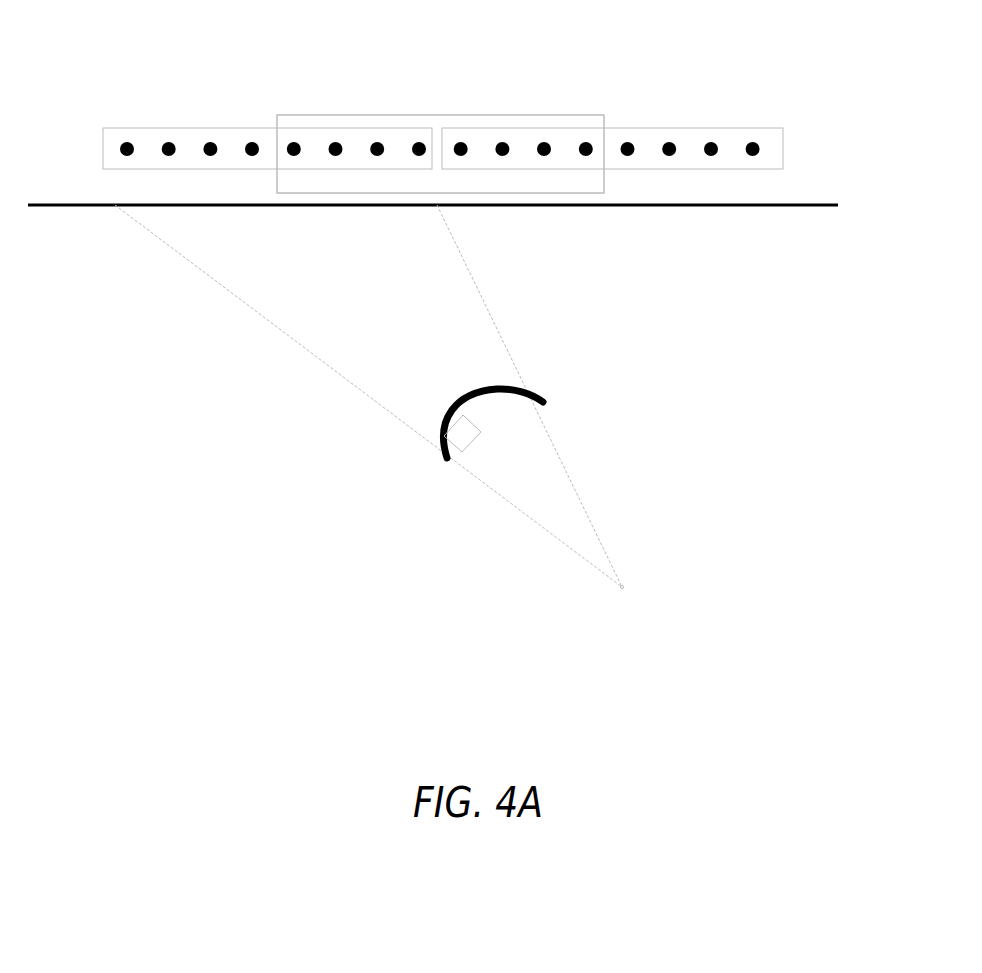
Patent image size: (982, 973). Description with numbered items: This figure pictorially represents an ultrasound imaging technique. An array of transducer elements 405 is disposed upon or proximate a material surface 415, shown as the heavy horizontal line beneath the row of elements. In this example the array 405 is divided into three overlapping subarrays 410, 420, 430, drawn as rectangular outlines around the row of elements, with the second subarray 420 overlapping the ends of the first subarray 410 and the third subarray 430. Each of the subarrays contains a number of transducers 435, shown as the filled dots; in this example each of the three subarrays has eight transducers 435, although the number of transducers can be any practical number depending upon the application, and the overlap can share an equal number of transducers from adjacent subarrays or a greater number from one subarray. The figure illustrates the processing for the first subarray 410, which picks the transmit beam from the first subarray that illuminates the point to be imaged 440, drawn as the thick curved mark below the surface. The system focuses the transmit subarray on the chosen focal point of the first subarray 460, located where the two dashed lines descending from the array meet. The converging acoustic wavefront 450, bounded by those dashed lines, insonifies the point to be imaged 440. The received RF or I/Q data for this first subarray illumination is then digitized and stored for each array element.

The array of transducer elements 405 is at (440, 106).
The first subarray 410 is at (172, 126).
The material surface 415 is at (753, 206).
The second subarray 420 is at (390, 115).
The third subarray 430 is at (648, 127).
The transducers 435 is at (760, 149).
The point to be imaged 440 is at (467, 448).
The converging acoustic wavefront 450 is at (503, 342).
The focal point of the first subarray 460 is at (622, 587).